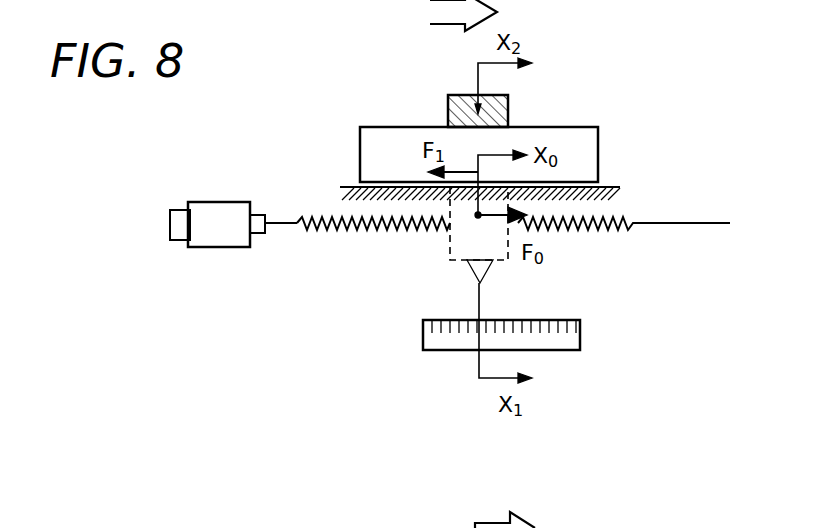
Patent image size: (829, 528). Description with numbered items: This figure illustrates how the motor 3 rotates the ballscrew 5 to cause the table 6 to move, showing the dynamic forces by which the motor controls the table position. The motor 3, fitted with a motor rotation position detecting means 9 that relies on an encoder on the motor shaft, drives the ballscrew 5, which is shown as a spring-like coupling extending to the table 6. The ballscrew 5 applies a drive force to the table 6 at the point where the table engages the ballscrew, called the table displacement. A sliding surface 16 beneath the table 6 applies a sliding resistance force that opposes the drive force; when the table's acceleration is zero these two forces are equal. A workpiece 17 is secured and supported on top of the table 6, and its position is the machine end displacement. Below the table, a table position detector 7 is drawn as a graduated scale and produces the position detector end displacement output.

The motor 3 is at (220, 205).
The ballscrew 5 is at (692, 223).
The table 6 is at (380, 127).
The table position detector 7 is at (582, 330).
The motor rotation position detecting means 9 is at (177, 210).
The sliding surface 16 is at (606, 188).
The workpiece 17 is at (505, 116).